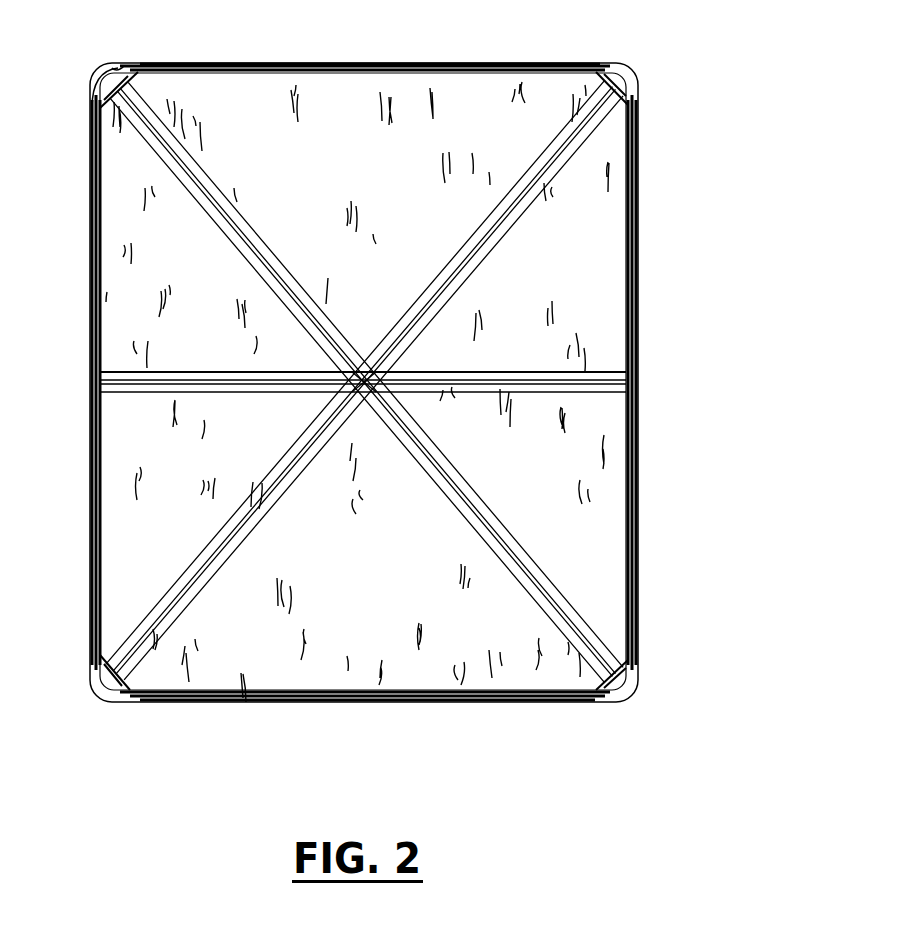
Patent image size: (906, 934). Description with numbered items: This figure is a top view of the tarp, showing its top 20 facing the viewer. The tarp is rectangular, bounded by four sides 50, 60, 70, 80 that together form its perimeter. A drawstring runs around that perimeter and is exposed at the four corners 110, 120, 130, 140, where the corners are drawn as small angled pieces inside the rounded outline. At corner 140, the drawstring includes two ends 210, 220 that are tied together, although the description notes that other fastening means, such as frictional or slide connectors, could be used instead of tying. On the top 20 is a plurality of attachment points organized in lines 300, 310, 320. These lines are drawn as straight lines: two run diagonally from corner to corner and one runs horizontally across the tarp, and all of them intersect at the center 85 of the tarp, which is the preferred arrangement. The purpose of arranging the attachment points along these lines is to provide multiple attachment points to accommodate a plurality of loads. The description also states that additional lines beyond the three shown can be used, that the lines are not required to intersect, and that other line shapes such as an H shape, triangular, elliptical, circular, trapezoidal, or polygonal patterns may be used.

The top 20 is at (298, 203).
The side 50 is at (478, 46).
The side 60 is at (639, 228).
The side 70 is at (452, 702).
The side 80 is at (90, 376).
The center 85 is at (357, 398).
The corner 110 is at (612, 67).
The corner 120 is at (636, 668).
The corner 130 is at (107, 702).
The corner 140 is at (133, 65).
The drawstring end 210 is at (117, 64).
The drawstring end 220 is at (112, 70).
The line of attachment points 300 is at (465, 250).
The line of attachment points 310 is at (474, 375).
The line of attachment points 320 is at (470, 510).